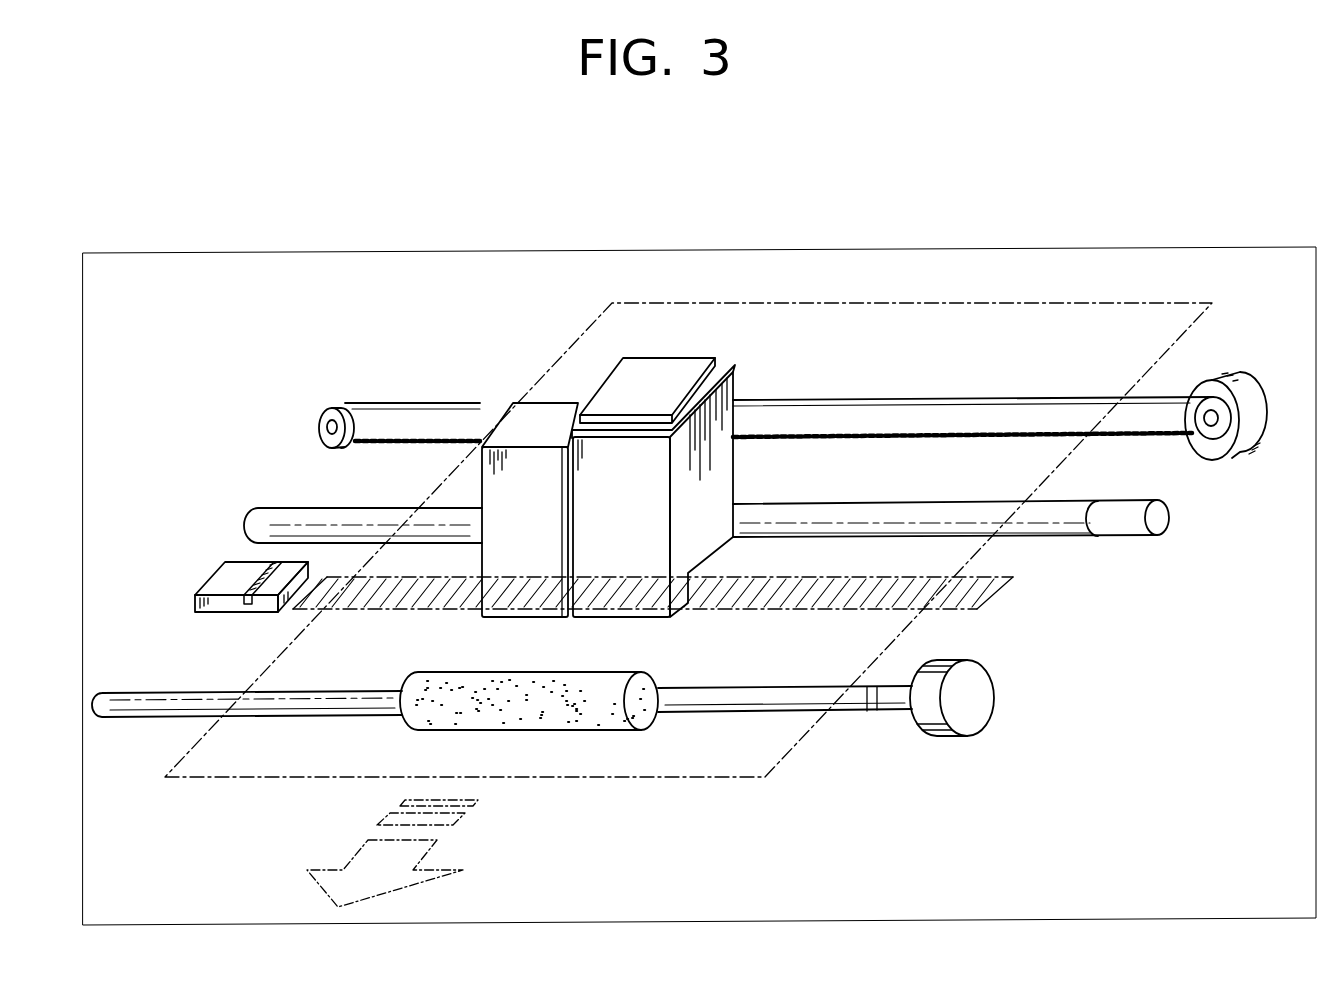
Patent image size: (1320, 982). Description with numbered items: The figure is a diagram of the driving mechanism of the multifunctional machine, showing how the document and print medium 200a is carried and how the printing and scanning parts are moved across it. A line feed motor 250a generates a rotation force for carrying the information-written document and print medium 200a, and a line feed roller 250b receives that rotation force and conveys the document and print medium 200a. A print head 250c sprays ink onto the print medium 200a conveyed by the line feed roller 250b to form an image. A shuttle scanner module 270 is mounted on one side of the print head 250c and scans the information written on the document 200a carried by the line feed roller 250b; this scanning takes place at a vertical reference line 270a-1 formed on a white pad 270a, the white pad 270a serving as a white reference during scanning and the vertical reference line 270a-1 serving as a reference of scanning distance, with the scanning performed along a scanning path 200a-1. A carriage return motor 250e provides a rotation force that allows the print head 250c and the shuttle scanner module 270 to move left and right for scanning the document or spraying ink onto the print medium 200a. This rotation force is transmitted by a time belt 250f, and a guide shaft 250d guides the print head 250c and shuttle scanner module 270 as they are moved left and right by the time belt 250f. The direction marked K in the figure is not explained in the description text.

The print medium 200a is at (325, 755).
The scanning path 200a-1 is at (818, 600).
The line feed motor 250a is at (947, 737).
The line feed roller 250b is at (530, 730).
The print head 250c is at (675, 358).
The guide shaft 250d is at (1048, 538).
The carriage return motor 250e is at (1253, 383).
The time belt 250f is at (850, 400).
The shuttle scanner module 270 is at (550, 402).
The white pad 270a is at (215, 567).
The vertical reference line 270a-1 is at (243, 612).
The direction K is at (990, 597).